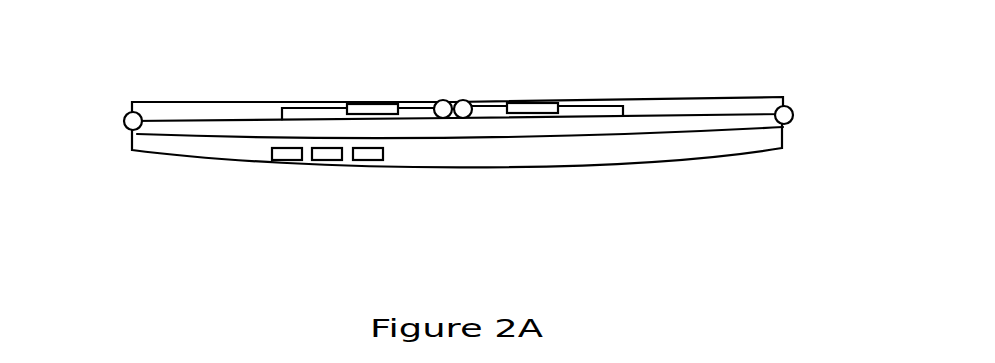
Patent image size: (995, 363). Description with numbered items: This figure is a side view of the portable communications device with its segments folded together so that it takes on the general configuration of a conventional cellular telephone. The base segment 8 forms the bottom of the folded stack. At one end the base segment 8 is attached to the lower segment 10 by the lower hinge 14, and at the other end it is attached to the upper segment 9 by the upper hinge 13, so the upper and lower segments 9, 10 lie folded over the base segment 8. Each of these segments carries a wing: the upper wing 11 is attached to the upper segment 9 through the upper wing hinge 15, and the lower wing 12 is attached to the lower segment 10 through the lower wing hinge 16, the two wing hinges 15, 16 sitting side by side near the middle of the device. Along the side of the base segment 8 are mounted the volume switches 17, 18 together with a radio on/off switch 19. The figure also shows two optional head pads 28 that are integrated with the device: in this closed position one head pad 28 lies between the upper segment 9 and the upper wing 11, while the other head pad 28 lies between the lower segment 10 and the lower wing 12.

The base segment 8 is at (588, 152).
The upper segment 9 is at (197, 107).
The lower segment 10 is at (698, 102).
The upper wing 11 is at (318, 115).
The lower wing 12 is at (568, 107).
The upper hinge 13 is at (124, 119).
The lower hinge 14 is at (793, 118).
The upper wing hinge 15 is at (448, 100).
The lower wing hinge 16 is at (468, 110).
The volume switch 17 is at (287, 160).
The volume switch 18 is at (327, 160).
The radio on/off switch 19 is at (357, 160).
The head pad 28 is at (358, 107).